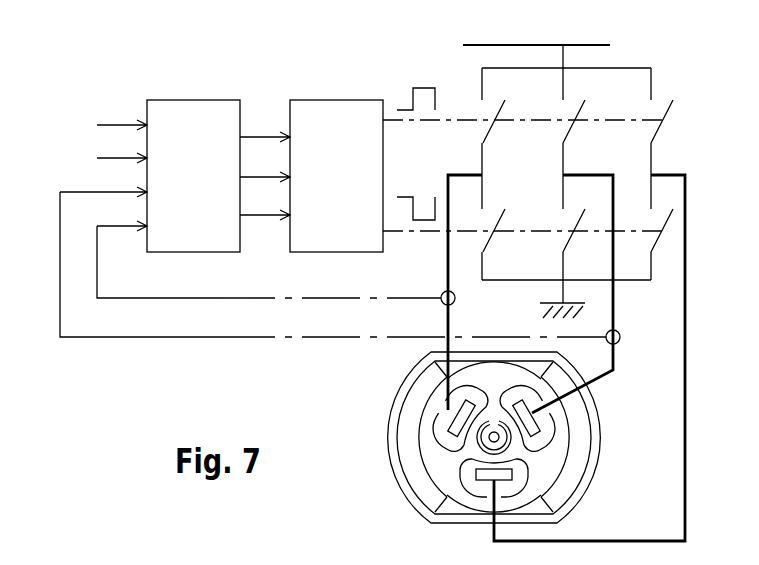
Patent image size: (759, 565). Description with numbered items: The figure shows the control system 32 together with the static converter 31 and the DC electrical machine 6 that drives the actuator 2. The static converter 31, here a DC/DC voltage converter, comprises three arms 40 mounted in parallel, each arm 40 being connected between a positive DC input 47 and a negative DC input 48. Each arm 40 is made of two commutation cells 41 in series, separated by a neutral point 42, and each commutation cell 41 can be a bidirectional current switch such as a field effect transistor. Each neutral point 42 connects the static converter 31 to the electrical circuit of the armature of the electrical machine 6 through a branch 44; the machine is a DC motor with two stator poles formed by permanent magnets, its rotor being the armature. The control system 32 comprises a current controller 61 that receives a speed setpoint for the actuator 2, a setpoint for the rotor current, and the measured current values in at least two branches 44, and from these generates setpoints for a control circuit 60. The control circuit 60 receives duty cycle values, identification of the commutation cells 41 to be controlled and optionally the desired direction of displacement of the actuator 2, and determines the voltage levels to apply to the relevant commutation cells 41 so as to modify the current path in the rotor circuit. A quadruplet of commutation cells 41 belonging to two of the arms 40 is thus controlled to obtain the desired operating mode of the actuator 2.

The actuator 2 is at (52, 173).
The control system 32 is at (208, 47).
The current controller 61 is at (182, 100).
The control circuit 60 is at (310, 100).
The static converter 31 is at (660, 47).
The positive DC input 47 is at (500, 44).
The commutation cells 41 is at (487, 128).
The neutral point 42 is at (482, 153).
The arm 40 is at (652, 160).
The branch 44 is at (613, 199).
The negative DC input 48 is at (633, 280).
The electrical machine 6 is at (372, 484).